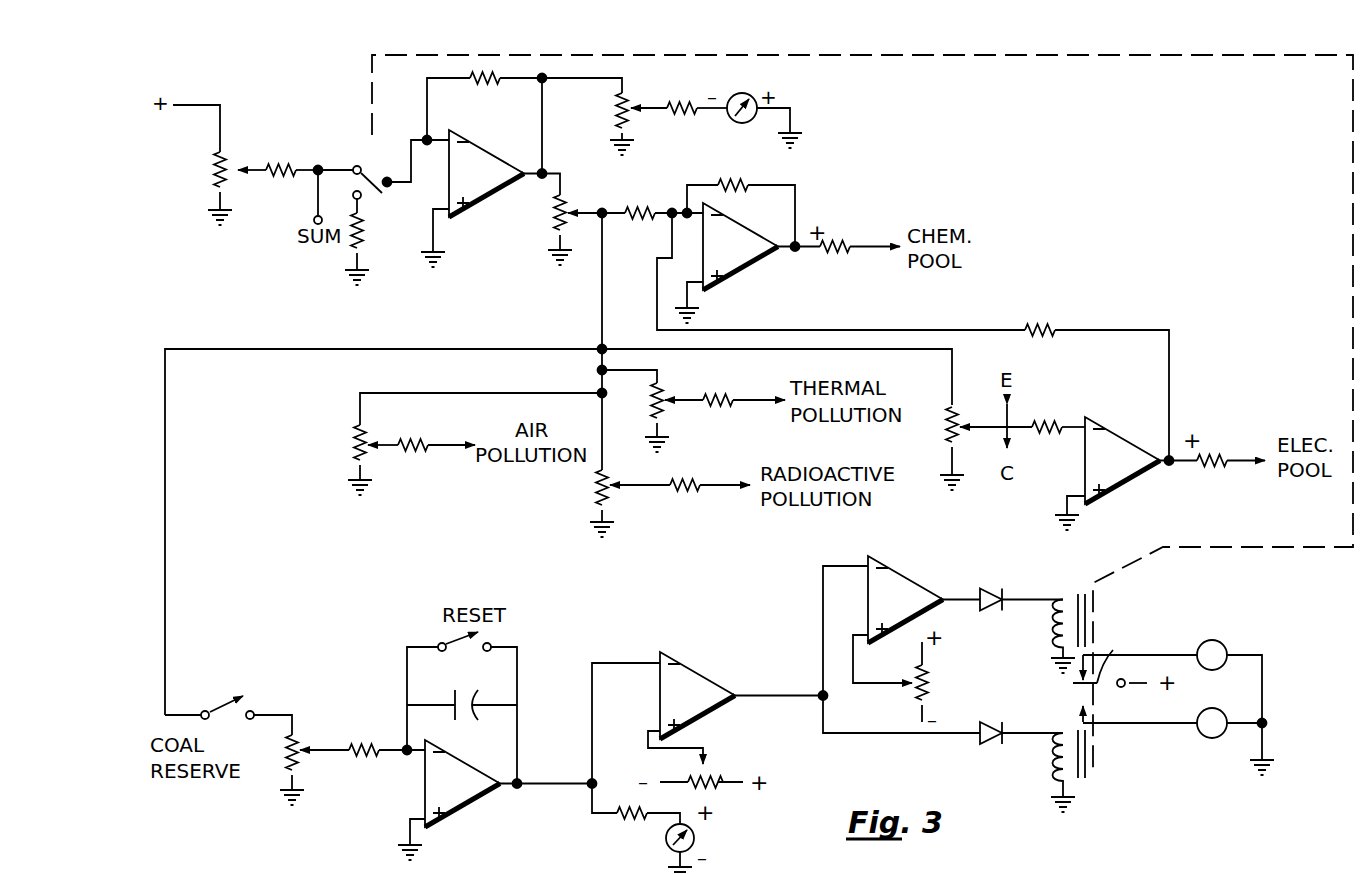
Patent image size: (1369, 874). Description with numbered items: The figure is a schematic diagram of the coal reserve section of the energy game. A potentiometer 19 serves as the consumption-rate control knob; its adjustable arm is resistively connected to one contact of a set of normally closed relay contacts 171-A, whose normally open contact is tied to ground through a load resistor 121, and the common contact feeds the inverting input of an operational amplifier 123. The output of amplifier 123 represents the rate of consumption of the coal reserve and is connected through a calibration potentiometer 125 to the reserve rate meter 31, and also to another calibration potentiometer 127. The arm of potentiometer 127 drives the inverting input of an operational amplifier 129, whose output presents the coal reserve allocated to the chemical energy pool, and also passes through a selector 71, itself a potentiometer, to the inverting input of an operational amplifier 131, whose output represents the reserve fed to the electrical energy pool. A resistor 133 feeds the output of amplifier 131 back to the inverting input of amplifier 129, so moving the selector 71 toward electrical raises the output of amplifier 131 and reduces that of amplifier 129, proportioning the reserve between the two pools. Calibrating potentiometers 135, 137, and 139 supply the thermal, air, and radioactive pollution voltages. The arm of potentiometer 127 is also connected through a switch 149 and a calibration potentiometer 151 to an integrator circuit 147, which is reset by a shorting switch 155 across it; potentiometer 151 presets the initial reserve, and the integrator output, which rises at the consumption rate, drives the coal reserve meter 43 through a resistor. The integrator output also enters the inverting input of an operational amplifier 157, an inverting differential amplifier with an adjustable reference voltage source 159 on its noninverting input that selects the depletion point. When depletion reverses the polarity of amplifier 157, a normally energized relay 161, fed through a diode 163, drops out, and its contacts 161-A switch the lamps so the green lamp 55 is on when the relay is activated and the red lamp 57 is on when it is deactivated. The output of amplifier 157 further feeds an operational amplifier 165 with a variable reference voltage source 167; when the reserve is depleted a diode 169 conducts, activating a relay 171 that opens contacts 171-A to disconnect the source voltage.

The potentiometer 19 is at (224, 158).
The normally closed relay contacts 171-A is at (393, 188).
The load resistor 121 is at (362, 240).
The operational amplifier 123 is at (476, 150).
The calibration potentiometer 125 is at (626, 103).
The reserve rate meter 31 is at (746, 97).
The calibration potentiometer 127 is at (566, 215).
The operational amplifier 129 is at (735, 230).
The resistor 133 is at (1036, 323).
The calibrating potentiometer 135 is at (662, 395).
The calibrating potentiometer 137 is at (364, 434).
The calibrating potentiometer 139 is at (610, 483).
The selector 71 is at (956, 428).
The operational amplifier 131 is at (1116, 497).
The switch 149 is at (226, 702).
The calibration potentiometer 151 is at (297, 748).
The integrator circuit 147 is at (503, 761).
The shorting switch 155 is at (482, 635).
The operational amplifier 157 is at (690, 668).
The adjustable reference voltage source 159 is at (702, 769).
The coal reserve meter 43 is at (698, 838).
The operational amplifier 165 is at (898, 571).
The variable reference voltage source 167 is at (930, 677).
The diode 169 is at (980, 591).
The relay 171 is at (1052, 625).
The diode 163 is at (994, 745).
The relay 161 is at (1052, 770).
The relay contacts 161-A is at (1108, 661).
The red lamp 57 is at (1222, 645).
The green lamp 55 is at (1222, 715).